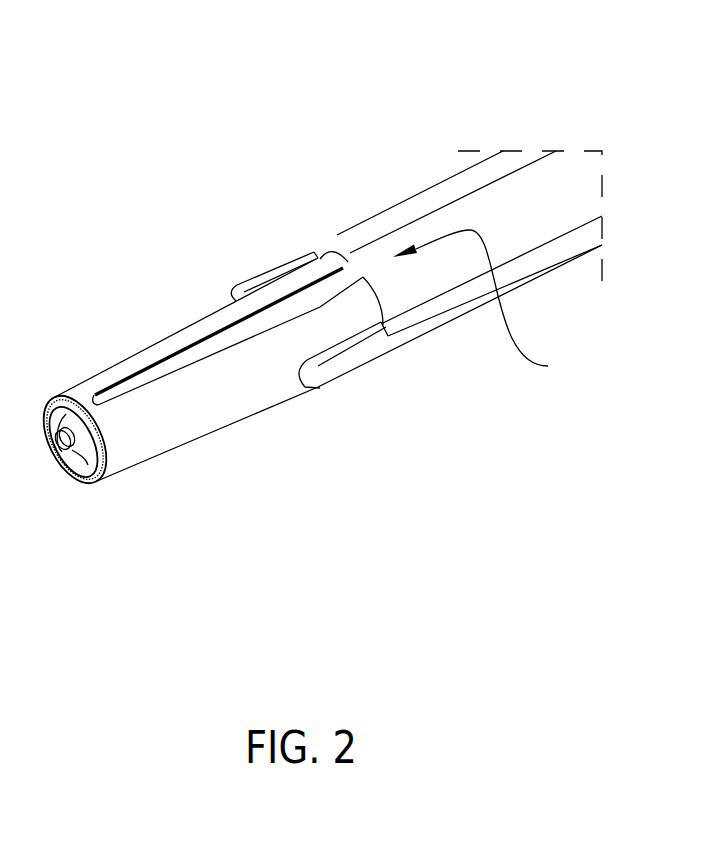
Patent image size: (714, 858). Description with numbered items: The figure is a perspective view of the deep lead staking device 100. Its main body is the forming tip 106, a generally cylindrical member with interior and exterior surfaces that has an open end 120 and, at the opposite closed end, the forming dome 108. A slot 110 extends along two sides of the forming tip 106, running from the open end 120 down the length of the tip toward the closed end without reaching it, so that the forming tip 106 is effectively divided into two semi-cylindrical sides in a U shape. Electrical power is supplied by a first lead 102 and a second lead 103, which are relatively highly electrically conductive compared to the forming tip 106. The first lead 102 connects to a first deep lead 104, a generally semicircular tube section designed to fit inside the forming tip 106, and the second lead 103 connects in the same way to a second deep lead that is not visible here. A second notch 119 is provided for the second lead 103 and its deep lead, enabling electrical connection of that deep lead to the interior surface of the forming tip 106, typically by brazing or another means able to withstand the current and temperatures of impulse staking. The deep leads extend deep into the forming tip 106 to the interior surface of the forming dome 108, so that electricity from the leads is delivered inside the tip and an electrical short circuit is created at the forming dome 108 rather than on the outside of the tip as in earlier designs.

The deep lead staking device 100 is at (577, 82).
The first lead 102 is at (337, 235).
The second lead 103 is at (524, 282).
The first deep lead 104 is at (343, 268).
The forming tip 106 is at (162, 450).
The forming dome 108 is at (82, 463).
The slot 110 is at (163, 368).
The second notch 119 is at (300, 373).
The open end 120 is at (488, 303).